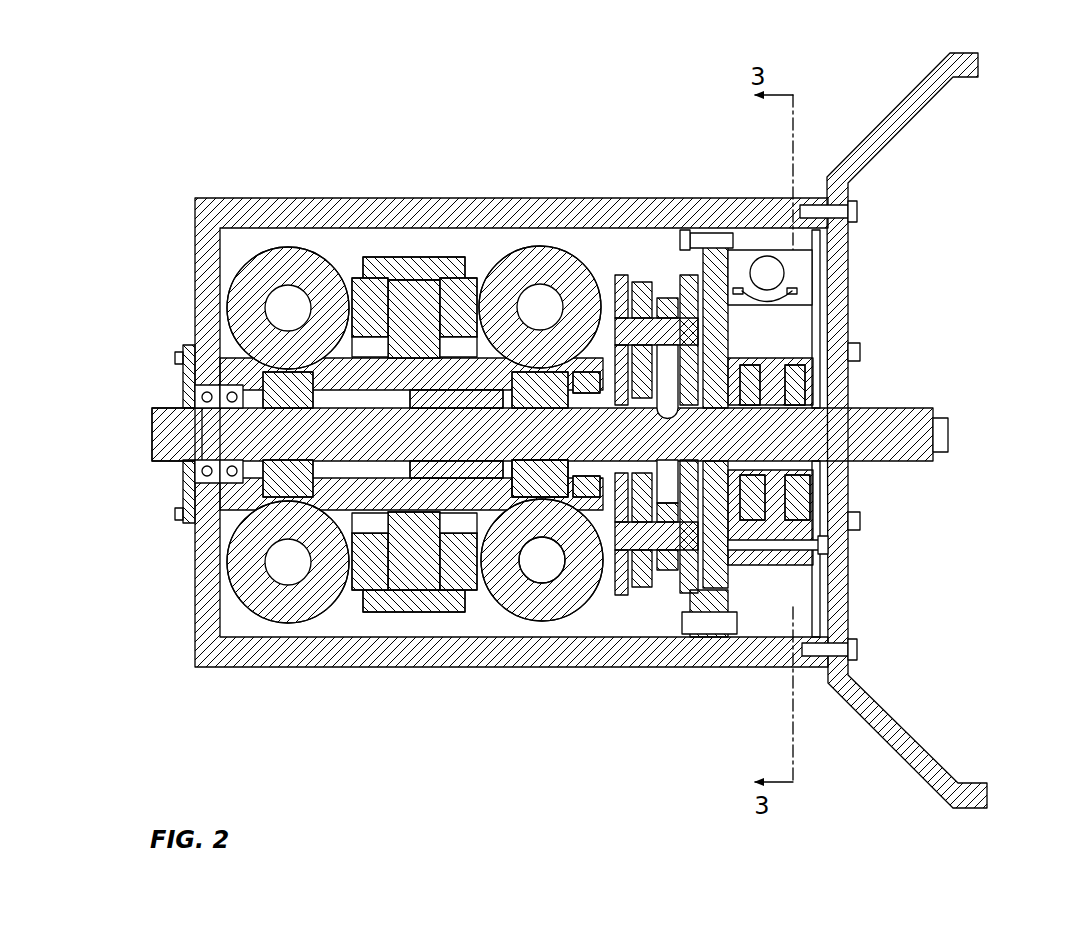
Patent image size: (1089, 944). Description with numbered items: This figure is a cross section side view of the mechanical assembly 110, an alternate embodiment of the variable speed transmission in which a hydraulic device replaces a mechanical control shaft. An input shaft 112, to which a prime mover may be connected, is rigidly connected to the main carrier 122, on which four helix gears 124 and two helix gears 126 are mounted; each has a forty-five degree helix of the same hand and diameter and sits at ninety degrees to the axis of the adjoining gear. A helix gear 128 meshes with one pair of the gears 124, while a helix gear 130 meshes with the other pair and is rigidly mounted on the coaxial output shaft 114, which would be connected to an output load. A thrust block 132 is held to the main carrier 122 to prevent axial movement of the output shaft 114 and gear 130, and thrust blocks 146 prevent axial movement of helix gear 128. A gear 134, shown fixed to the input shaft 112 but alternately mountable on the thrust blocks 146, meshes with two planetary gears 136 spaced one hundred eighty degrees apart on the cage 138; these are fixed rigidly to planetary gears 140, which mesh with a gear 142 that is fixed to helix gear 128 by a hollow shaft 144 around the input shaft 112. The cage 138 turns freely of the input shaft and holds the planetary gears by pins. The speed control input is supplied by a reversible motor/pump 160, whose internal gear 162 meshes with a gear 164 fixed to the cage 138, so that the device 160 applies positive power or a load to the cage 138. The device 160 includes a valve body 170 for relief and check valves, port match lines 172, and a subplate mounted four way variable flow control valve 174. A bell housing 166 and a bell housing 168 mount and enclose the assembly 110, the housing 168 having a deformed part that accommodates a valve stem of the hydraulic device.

The mechanical assembly 110 is at (814, 772).
The input shaft 112 is at (922, 435).
The output shaft 114 is at (165, 463).
The main carrier 122 is at (423, 372).
The helix gears 124 is at (291, 250).
The helix gears 126 is at (456, 298).
The helix gear 128 is at (537, 483).
The helix gear 130 is at (283, 380).
The thrust block 132 is at (238, 512).
The gear 134 is at (712, 520).
The planetary gears 136 is at (663, 300).
The cage 138 is at (620, 597).
The planetary gears 140 is at (642, 587).
The gear 142 is at (523, 600).
The hollow shaft 144 is at (592, 463).
The thrust blocks 146 is at (585, 365).
The reversible motor/pump 160 is at (788, 478).
The internal gear 162 is at (747, 478).
The gear 164 is at (830, 400).
The bell housing 166 is at (940, 758).
The bell housing 168 is at (230, 200).
The valve body 170 is at (797, 345).
The port match lines 172 is at (776, 355).
The four way variable flow control valve 174 is at (798, 262).